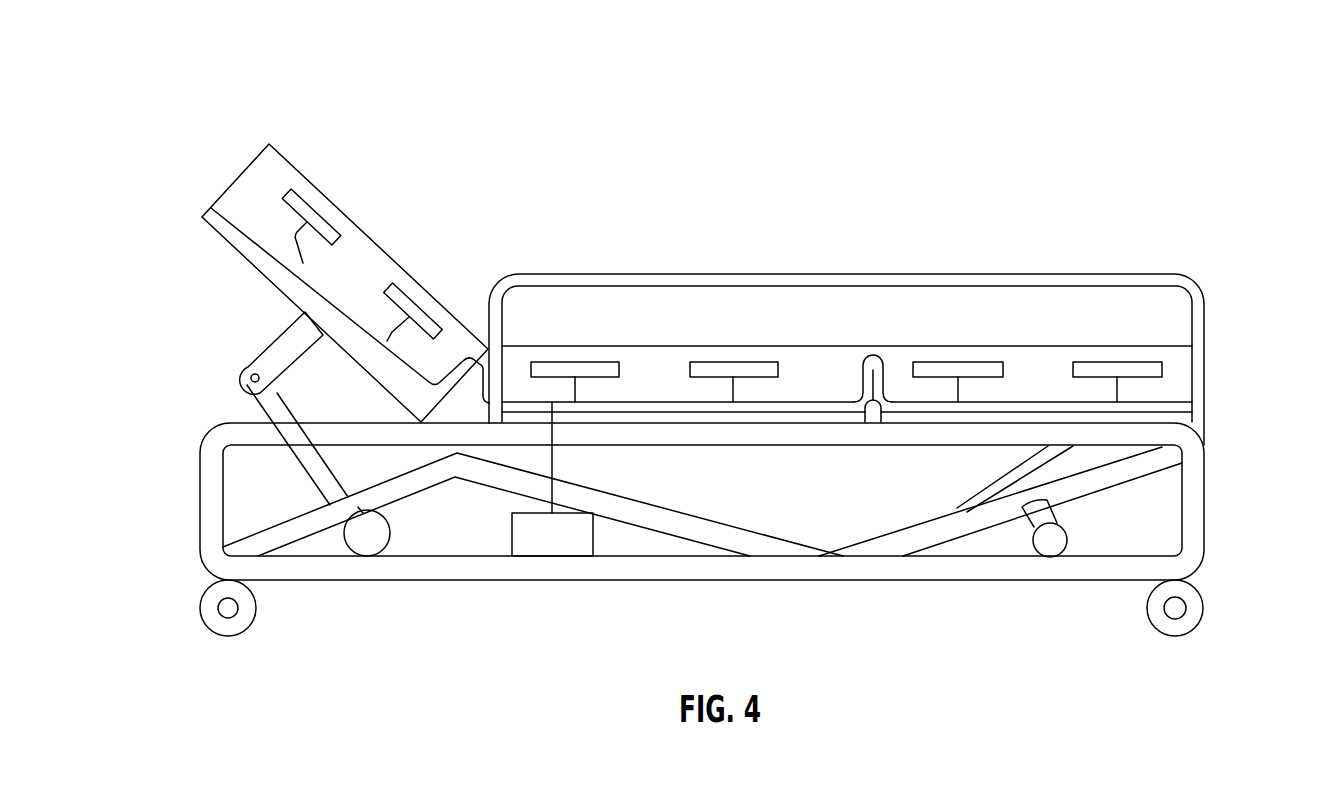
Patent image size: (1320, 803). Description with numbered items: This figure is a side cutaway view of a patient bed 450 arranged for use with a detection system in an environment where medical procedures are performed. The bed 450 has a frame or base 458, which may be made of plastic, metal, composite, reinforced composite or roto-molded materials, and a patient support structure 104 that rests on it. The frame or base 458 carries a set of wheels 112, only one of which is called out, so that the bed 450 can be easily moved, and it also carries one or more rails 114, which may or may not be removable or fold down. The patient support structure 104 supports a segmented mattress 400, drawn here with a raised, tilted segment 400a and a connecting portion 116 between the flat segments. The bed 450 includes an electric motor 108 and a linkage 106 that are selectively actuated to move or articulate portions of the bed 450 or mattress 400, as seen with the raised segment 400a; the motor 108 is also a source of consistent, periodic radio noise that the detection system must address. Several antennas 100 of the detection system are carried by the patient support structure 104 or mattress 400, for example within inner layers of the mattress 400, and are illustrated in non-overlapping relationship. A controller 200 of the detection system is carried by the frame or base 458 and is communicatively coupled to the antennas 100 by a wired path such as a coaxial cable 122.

The bed 450 is at (170, 78).
The frame or base 458 is at (1207, 496).
The wheels 112 is at (1205, 608).
The electric motor 108 is at (366, 545).
The controller 200 is at (553, 545).
The coaxial cable 122 is at (551, 508).
The segmented mattress 400 is at (846, 425).
The articulating deck section 400a is at (371, 232).
The rail 114 is at (690, 274).
The deck connector 116 is at (893, 346).
The patient support structure 104 is at (237, 243).
The linkage 106 is at (277, 340).
The antenna 100 is at (325, 218).